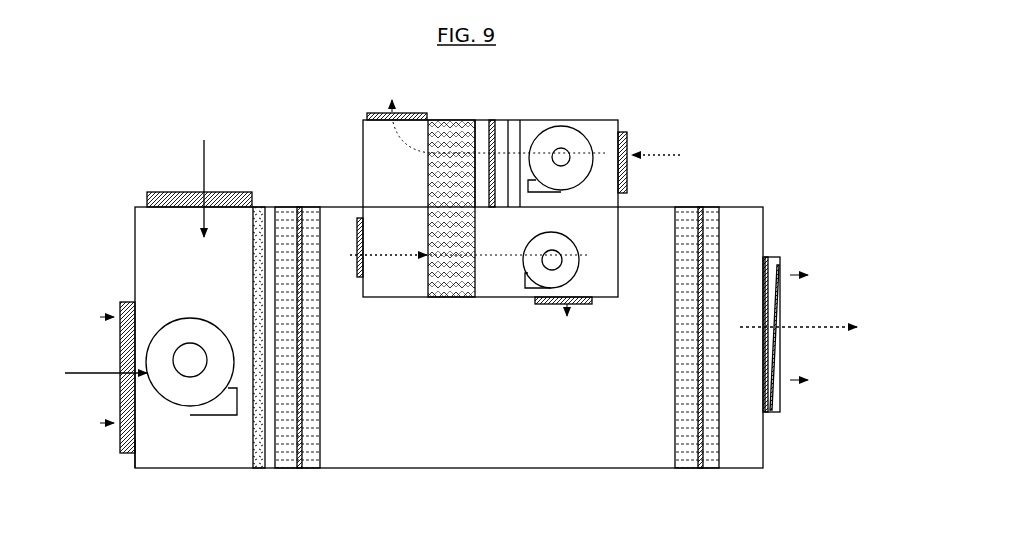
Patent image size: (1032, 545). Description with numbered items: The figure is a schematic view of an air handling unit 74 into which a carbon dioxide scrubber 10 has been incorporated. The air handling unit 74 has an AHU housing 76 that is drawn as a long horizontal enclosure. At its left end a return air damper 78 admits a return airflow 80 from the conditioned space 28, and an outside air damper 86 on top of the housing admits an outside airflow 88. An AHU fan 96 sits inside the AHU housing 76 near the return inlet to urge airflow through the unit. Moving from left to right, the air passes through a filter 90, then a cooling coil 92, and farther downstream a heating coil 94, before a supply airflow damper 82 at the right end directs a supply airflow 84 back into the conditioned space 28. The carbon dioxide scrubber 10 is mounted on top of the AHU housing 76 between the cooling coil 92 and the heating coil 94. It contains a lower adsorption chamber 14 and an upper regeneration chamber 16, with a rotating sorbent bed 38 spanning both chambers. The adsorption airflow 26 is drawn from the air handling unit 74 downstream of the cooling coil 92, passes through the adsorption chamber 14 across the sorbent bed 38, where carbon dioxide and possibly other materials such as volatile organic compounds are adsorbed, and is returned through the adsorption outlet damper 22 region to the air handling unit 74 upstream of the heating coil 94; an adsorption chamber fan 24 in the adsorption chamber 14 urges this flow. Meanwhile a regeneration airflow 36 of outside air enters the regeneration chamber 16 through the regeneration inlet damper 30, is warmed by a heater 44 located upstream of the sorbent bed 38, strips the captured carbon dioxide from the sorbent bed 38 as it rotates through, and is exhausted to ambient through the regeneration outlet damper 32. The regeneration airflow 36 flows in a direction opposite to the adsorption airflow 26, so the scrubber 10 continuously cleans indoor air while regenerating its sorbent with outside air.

The CO2 scrubber 10 is at (360, 160).
The adsorption chamber 14 is at (608, 243).
The regeneration chamber 16 is at (413, 191).
The adsorption outlet damper 22 is at (358, 218).
The adsorption chamber fan 24 is at (547, 303).
The adsorption airflow 26 is at (397, 260).
The conditioned space 28 is at (70, 421).
The regeneration inlet damper 30 is at (625, 135).
The regeneration outlet damper 32 is at (373, 113).
The regeneration airflow 36 is at (607, 157).
The sorbent bed 38 is at (465, 208).
The heater 44 is at (493, 133).
The air handling unit 74 is at (777, 157).
The AHU housing 76 is at (135, 228).
The return air damper 78 is at (135, 452).
The return airflow 80 is at (90, 372).
The supply airflow damper 82 is at (775, 257).
The supply airflow 84 is at (825, 327).
The outside air damper 86 is at (155, 193).
The outside airflow 88 is at (202, 172).
The filter 90 is at (257, 300).
The cooling coil 92 is at (305, 335).
The heating coil 94 is at (687, 337).
The AHU fan 96 is at (208, 401).